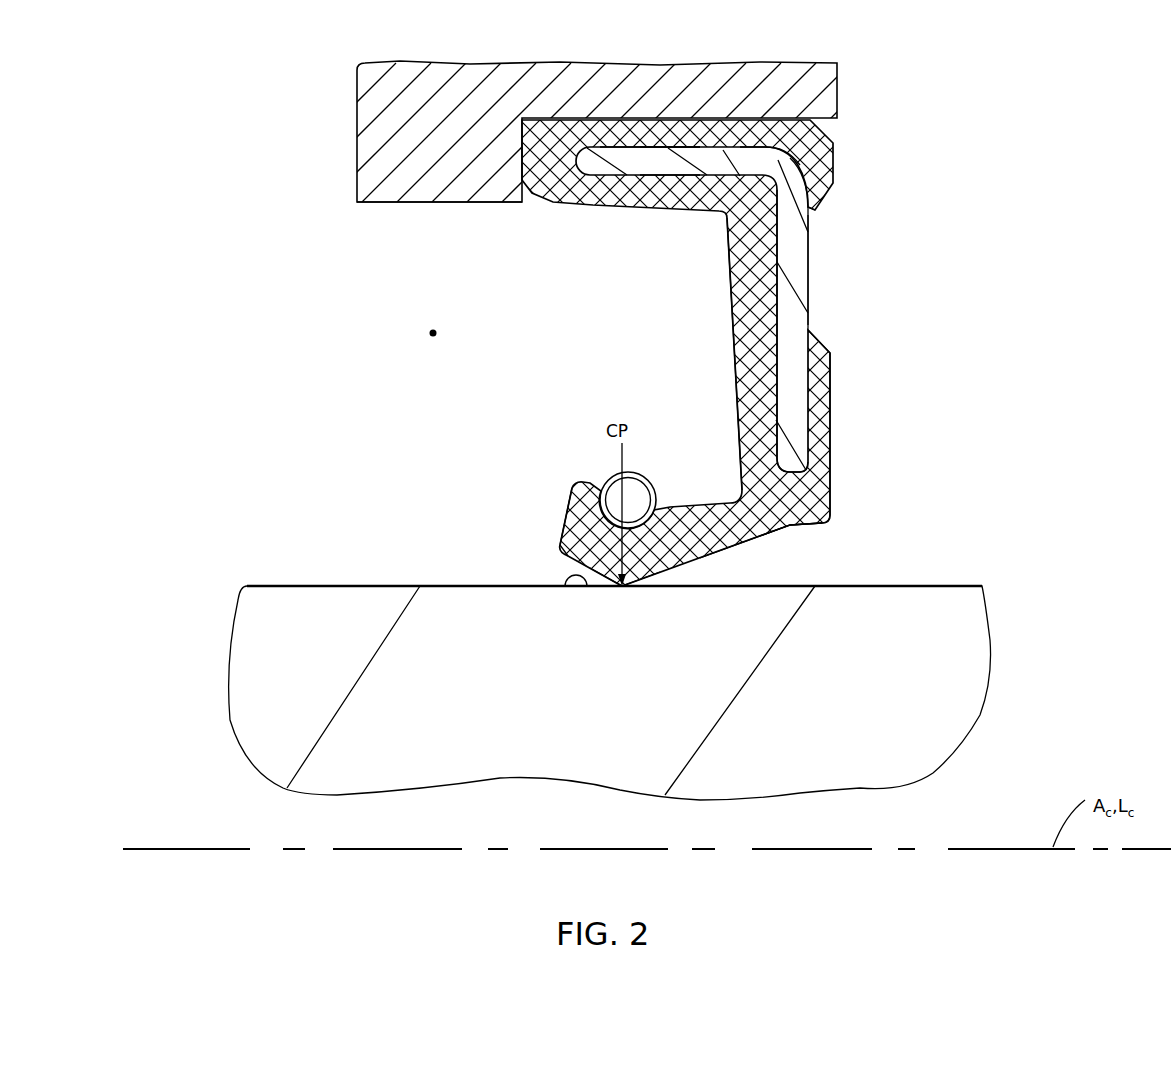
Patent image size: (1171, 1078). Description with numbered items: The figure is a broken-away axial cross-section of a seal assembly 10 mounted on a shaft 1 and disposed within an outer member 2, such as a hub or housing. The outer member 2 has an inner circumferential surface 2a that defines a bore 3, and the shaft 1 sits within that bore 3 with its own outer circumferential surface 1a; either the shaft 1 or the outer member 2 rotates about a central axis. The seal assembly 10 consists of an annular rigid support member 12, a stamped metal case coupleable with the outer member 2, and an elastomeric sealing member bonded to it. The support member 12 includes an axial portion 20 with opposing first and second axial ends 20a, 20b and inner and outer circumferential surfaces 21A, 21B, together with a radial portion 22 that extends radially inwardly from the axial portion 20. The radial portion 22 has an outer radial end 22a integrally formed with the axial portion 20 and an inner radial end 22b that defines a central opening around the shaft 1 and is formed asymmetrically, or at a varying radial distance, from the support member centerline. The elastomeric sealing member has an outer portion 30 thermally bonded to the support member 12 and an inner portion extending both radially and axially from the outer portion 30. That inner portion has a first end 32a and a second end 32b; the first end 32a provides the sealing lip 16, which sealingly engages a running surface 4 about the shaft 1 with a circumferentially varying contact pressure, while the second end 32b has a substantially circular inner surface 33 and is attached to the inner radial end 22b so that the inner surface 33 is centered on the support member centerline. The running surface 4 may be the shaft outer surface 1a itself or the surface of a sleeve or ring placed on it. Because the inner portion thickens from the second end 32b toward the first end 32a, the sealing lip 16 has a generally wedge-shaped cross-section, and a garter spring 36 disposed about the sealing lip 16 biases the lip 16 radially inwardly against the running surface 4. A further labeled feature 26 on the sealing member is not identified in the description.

The inner shaft 1 is at (568, 646).
The outer circumferential surface of the shaft 1a is at (298, 575).
The outer member 2 is at (348, 118).
The inner circumferential surface of the outer member 2a is at (392, 203).
The bore 3 is at (430, 331).
The running surface 4 is at (565, 586).
The seal assembly 10 is at (743, 338).
The annular rigid support member 12 is at (850, 265).
The sealing lip 16 is at (652, 568).
The axial portion of the support member 20 is at (677, 303).
The first axial end of the axial portion 20a is at (593, 152).
The second axial end of the axial portion 20b is at (770, 160).
The inner circumferential surface of the axial portion 21A is at (660, 208).
The outer circumferential surface of the axial portion 21B is at (665, 145).
The radial portion of the support member 22 is at (743, 310).
The outer radial end of the radial portion 22a is at (810, 207).
The inner radial end of the radial portion 22b is at (793, 472).
The outer lip portion 26 is at (826, 503).
The outer portion of the sealing member 30 is at (725, 298).
The first end of the sealing member inner portion 32a is at (567, 515).
The second end of the sealing member inner portion 32b is at (788, 518).
The inner surface of the second end 33 is at (780, 530).
The garter spring 36 is at (647, 472).